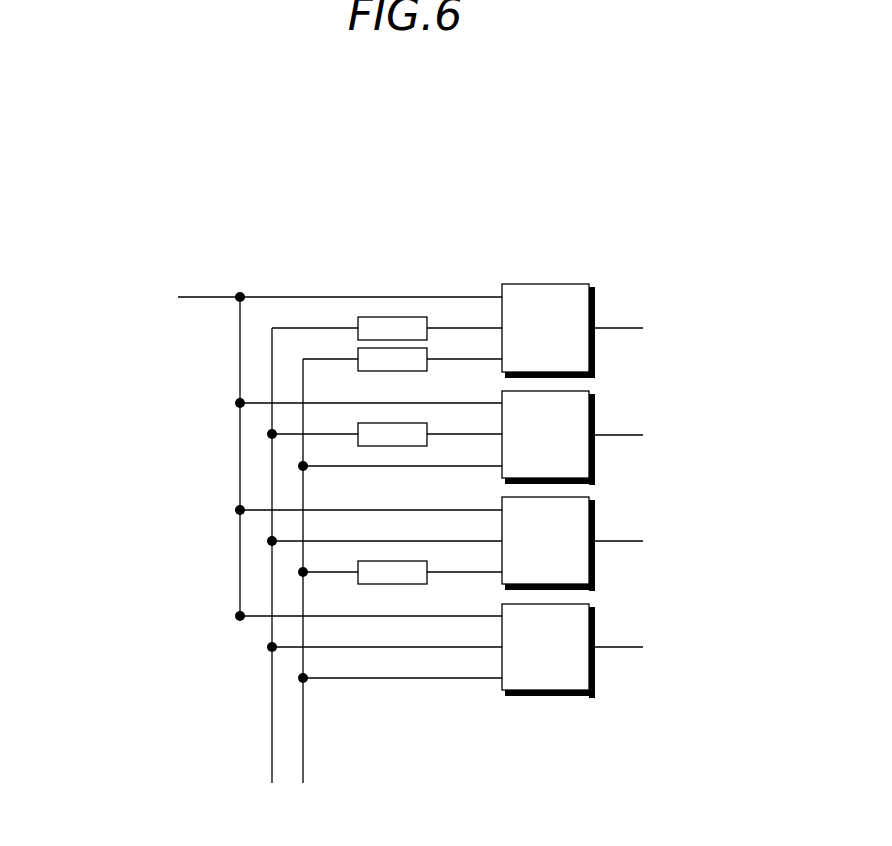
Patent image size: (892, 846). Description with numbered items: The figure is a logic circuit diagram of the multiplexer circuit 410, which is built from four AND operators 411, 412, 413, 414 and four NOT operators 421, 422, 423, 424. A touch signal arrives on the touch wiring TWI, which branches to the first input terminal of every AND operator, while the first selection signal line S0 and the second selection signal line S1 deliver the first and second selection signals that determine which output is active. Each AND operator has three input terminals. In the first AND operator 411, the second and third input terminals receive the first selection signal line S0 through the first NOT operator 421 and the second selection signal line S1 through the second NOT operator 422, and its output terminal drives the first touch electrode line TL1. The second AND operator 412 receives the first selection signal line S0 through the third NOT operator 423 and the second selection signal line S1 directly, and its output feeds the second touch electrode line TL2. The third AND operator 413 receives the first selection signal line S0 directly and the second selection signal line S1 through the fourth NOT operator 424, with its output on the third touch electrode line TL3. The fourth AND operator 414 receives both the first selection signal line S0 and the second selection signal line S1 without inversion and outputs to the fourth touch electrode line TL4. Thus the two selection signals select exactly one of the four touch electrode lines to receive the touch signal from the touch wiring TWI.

The multiplexer circuit 410 is at (584, 226).
The first AND operator 411 is at (595, 290).
The second AND operator 412 is at (595, 397).
The third AND operator 413 is at (595, 503).
The fourth AND operator 414 is at (595, 610).
The first NOT operator 421 is at (427, 318).
The second NOT operator 422 is at (427, 349).
The third NOT operator 423 is at (427, 424).
The fourth NOT operator 424 is at (427, 562).
The touch wiring TWI is at (202, 297).
The first touch electrode line TL1 is at (639, 328).
The second touch electrode line TL2 is at (639, 434).
The third touch electrode line TL3 is at (639, 541).
The fourth touch electrode line TL4 is at (639, 647).
The first selection signal line S0 is at (272, 569).
The second selection signal line S1 is at (303, 584).